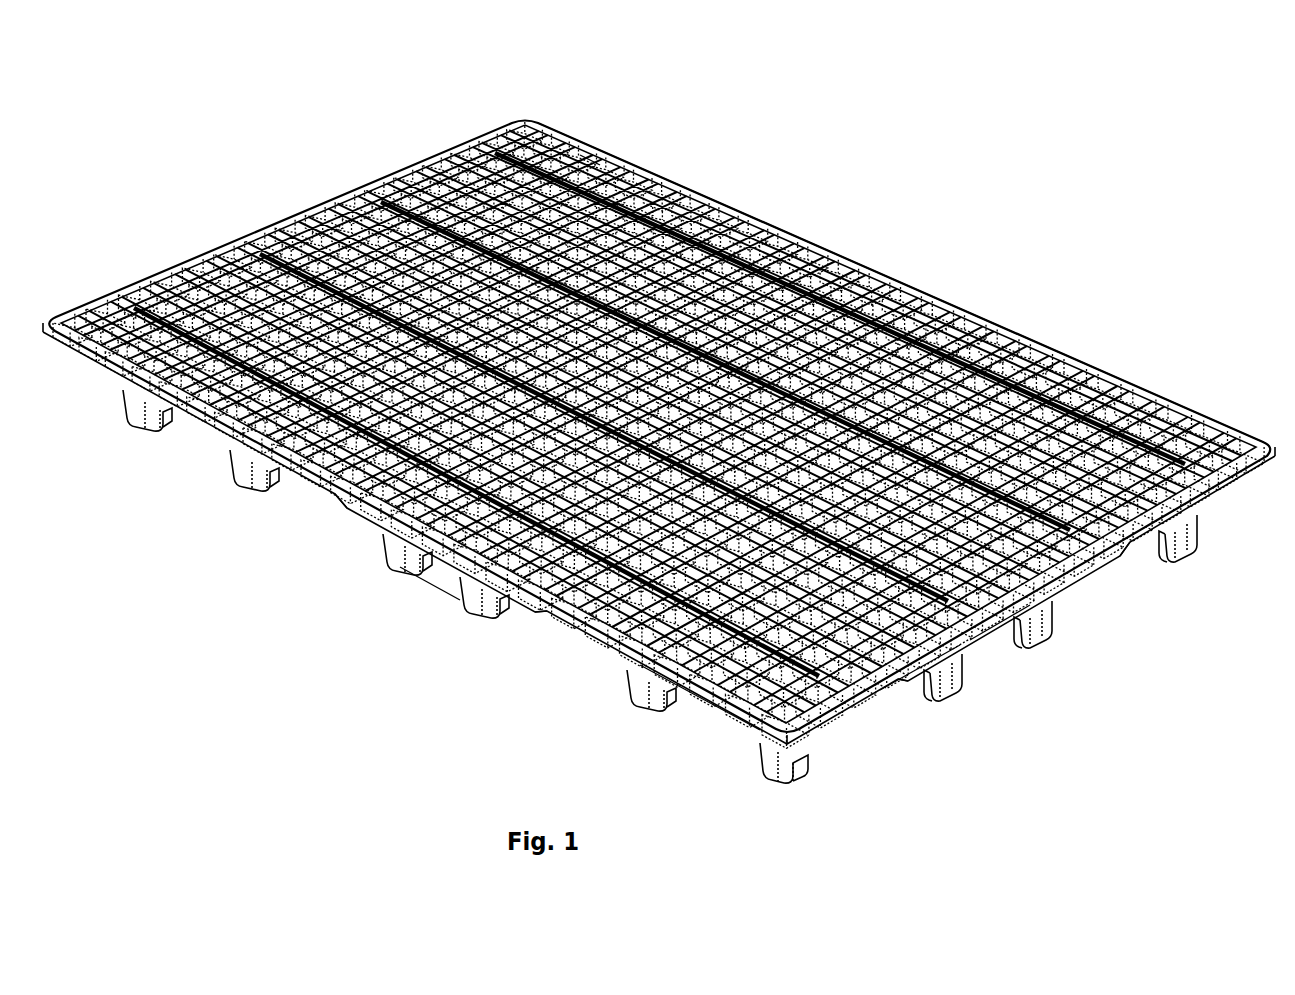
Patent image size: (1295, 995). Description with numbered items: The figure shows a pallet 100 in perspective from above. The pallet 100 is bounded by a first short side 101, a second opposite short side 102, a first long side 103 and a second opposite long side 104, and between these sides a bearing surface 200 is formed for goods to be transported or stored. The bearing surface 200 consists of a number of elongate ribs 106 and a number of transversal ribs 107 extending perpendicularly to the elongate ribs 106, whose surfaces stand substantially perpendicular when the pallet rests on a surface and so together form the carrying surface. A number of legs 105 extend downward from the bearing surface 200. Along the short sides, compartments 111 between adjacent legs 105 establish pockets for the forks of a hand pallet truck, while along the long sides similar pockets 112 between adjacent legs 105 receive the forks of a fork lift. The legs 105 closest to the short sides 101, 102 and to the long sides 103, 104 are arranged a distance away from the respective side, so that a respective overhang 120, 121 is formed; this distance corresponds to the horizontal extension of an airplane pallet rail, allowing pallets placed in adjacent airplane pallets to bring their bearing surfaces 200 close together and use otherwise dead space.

The pallet 100 is at (703, 160).
The first short side 101 is at (325, 190).
The second short side 102 is at (1000, 660).
The first long side 103 is at (428, 594).
The second long side 104 is at (878, 258).
The legs 105 is at (148, 418).
The elongate ribs 106 is at (1195, 430).
The transversal ribs 107 is at (500, 145).
The compartments 111 is at (898, 718).
The pockets 112 is at (312, 506).
The overhang 120 is at (925, 683).
The overhang 121 is at (700, 697).
The bearing surface 200 is at (596, 148).